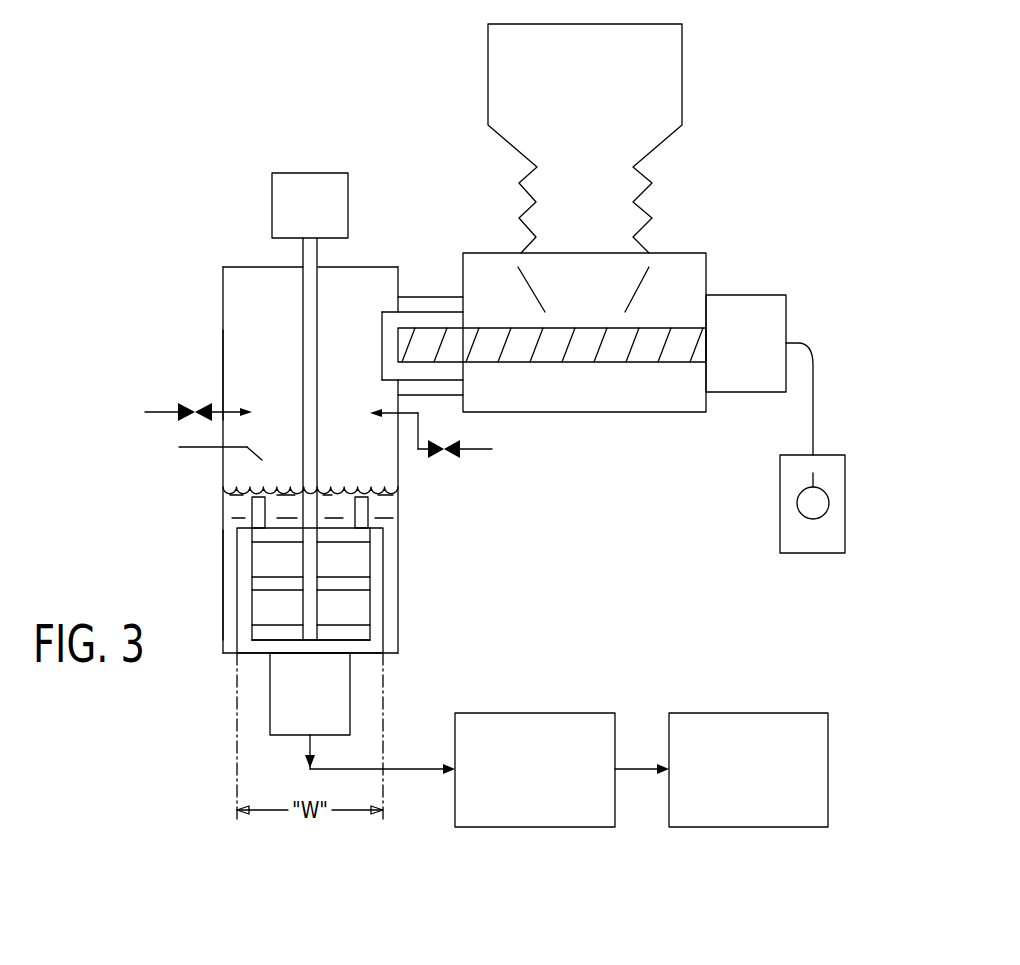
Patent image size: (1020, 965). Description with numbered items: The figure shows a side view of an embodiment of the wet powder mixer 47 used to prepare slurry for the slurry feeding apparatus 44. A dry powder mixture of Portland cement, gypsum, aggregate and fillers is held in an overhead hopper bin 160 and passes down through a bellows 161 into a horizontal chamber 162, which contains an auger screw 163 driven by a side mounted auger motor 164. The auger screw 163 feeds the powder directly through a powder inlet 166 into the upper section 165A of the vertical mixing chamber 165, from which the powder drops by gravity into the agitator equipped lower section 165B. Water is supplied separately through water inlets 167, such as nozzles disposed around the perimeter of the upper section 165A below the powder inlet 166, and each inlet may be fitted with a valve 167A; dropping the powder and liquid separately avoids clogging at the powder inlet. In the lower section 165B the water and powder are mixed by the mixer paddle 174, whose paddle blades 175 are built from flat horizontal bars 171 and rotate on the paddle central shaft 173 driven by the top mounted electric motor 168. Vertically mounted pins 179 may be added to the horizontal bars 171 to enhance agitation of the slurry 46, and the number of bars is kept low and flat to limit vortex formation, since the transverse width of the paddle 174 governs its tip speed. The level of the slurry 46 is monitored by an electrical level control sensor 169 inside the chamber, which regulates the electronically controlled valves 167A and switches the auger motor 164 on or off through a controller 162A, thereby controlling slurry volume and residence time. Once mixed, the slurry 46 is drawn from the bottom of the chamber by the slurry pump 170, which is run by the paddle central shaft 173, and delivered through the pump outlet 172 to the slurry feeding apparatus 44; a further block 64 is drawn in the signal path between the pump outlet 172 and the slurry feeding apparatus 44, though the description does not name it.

The wet powder mixer 47 is at (783, 137).
The hopper bin 160 is at (599, 97).
The bellows 161 is at (607, 210).
The horizontal chamber 162 is at (706, 253).
The controller 162A is at (780, 489).
The auger screw 163 is at (616, 362).
The auger motor 164 is at (782, 302).
The vertical mixing chamber 165 is at (213, 287).
The upper section 165A is at (223, 330).
The lower section 165B is at (236, 532).
The powder inlet 166 is at (388, 322).
The water inlets 167 is at (145, 412).
The valves 167A is at (197, 407).
The electric motor 168 is at (272, 183).
The level control sensor 169 is at (196, 448).
The slurry pump 170 is at (270, 689).
The horizontal bars 171 is at (355, 633).
The pump outlet 172 is at (308, 750).
The paddle central shaft 173 is at (303, 344).
The mixer paddle 174 is at (378, 623).
The paddle blades 175 is at (237, 572).
The vertically mounted pins 179 is at (370, 504).
The slurry 46 is at (233, 512).
The controller 64 is at (594, 713).
The slurry feeding apparatus 44 is at (817, 713).